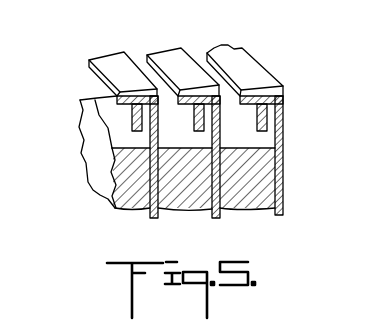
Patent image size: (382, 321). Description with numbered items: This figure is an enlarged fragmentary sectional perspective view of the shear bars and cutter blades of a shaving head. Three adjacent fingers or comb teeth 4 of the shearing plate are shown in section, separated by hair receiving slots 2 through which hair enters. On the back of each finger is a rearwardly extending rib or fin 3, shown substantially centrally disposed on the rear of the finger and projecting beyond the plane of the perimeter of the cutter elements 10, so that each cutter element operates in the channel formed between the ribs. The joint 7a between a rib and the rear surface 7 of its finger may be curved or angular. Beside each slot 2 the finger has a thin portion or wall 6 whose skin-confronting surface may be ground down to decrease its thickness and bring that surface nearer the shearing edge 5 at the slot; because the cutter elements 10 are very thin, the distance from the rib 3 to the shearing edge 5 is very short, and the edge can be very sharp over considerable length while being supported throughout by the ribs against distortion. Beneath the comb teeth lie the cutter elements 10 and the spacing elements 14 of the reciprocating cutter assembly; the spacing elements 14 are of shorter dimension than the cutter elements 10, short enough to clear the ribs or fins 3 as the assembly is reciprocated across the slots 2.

The hair receiving slot 2 is at (200, 56).
The rib or fin 3 is at (133, 113).
The comb tooth or finger 4 is at (193, 76).
The shearing edge 5 is at (232, 79).
The thin portion or wall of the finger 6 is at (118, 96).
The rear surface of the finger 7 is at (194, 106).
The joint between rib and finger rear surface 7a is at (258, 107).
The cutter element 10 is at (221, 210).
The spacing element 14 is at (173, 190).